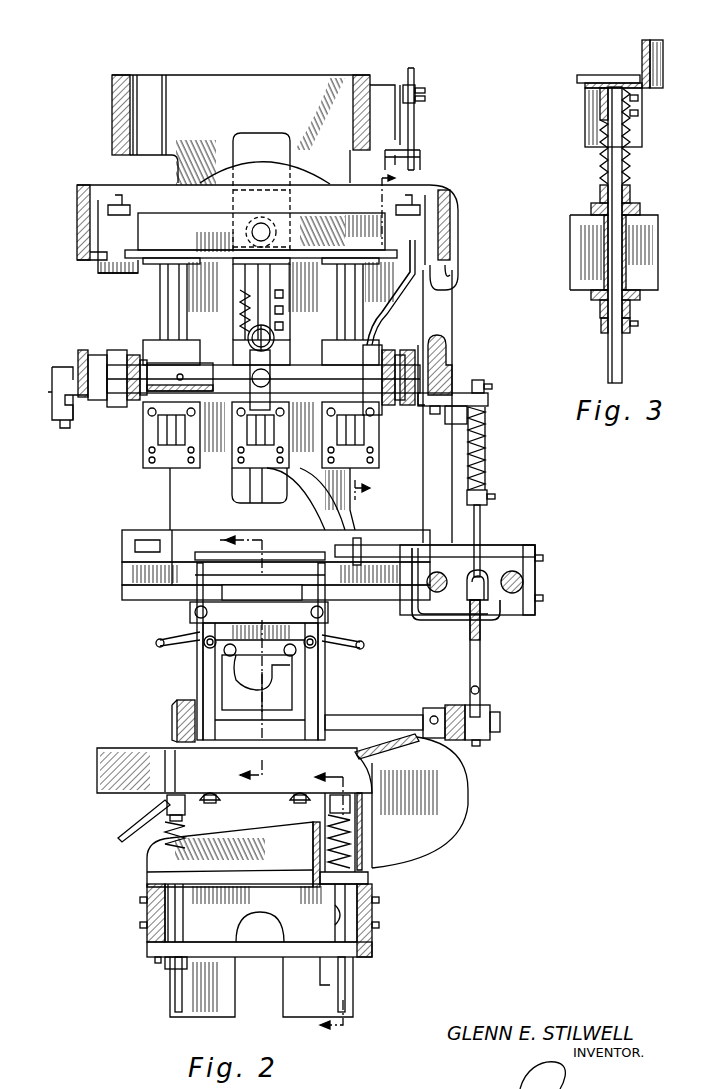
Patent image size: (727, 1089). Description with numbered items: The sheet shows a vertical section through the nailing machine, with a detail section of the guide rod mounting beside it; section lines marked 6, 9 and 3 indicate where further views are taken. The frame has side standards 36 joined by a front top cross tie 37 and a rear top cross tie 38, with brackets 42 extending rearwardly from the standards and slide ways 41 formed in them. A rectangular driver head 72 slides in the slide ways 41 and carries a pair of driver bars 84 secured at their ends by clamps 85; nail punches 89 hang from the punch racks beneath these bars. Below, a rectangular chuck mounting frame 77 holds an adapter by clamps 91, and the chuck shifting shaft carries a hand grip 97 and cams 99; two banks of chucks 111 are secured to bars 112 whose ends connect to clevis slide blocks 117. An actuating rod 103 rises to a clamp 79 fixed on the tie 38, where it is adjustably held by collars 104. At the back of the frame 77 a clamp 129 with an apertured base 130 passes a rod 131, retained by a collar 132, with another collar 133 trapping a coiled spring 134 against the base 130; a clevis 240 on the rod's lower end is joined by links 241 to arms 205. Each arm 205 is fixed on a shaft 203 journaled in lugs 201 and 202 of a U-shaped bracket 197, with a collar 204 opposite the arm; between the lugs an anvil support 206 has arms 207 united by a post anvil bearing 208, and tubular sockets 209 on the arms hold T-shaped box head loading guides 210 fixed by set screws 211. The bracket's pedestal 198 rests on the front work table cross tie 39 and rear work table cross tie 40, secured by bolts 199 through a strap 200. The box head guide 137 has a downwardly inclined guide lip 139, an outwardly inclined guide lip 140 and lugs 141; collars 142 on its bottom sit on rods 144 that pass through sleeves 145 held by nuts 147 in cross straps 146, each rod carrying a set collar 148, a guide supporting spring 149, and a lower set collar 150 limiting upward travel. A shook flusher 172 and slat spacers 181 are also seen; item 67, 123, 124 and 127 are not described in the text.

In FIG. 2, the side standards 36 is at (275, 75).
In FIG. 2, the front top cross tie 37 is at (121, 75).
In FIG. 2, the rear top cross tie 38 is at (362, 75).
In FIG. 2, the clamp 79 is at (393, 80).
In FIG. 2, the collars 104 is at (415, 88).
In FIG. 2, the actuating rod 103 is at (416, 148).
In FIG. 2, the slide ways 41 is at (282, 185).
In FIG. 2, the section line 6 is at (381, 334).
In FIG. 2, the driver head 72 is at (77, 205).
In FIG. 2, the clevis slide blocks 117 is at (100, 274).
In FIG. 2, the clamps 85 is at (138, 201).
In FIG. 2, the driver bars 84 is at (312, 214).
In FIG. 2, the nail punches 89 is at (160, 296).
In FIG. 2, the bars 112 is at (312, 363).
In FIG. 2, the hand grip 97 is at (152, 365).
In FIG. 2, the coupling 127 is at (248, 338).
In FIG. 2, the cams 99 is at (115, 352).
In FIG. 2, the chuck mounting frame 77 is at (78, 362).
In FIG. 2, the clamps 91 is at (52, 415).
In FIG. 2, the bearing 124 is at (412, 352).
In FIG. 2, the support post 123 is at (420, 348).
In FIG. 2, the clamp 129 is at (452, 360).
In FIG. 2, the apertured base 130 is at (488, 399).
In FIG. 2, the collar 132 is at (485, 386).
In FIG. 2, the coiled spring 134 is at (486, 455).
In FIG. 2, the collar 133 is at (488, 495).
In FIG. 2, the rod 131 is at (481, 522).
In FIG. 2, the chucks 111 is at (145, 468).
In FIG. 2, the manifold 67 is at (295, 505).
In FIG. 2, the shook flusher 172 is at (122, 532).
In FIG. 2, the section line 9 is at (234, 658).
In FIG. 2, the slat spacers 181 is at (372, 545).
In FIG. 2, the clevis 240 is at (485, 575).
In FIG. 2, the brackets 42 is at (422, 625).
In FIG. 2, the links 241 is at (482, 652).
In FIG. 2, the post anvil bearing 208 is at (200, 560).
In FIG. 2, the anvil support 206 is at (190, 657).
In FIG. 2, the arms 207 is at (222, 678).
In FIG. 2, the tubular sockets 209 is at (205, 638).
In FIG. 2, the box head loading guides 210 is at (158, 640).
In FIG. 2, the set screws 211 is at (215, 645).
In FIG. 2, the lug 201 is at (177, 715).
In FIG. 2, the shaft 203 is at (385, 714).
In FIG. 2, the collar 204 is at (434, 710).
In FIG. 2, the lug 202 is at (455, 705).
In FIG. 2, the arm 205 is at (492, 712).
In FIG. 2, the outwardly inclined guide lip 140 is at (97, 765).
In FIG. 2, the section line 3 is at (320, 901).
In FIG. 2, the U-shaped bracket 197 is at (440, 822).
In FIG. 2, the lugs 141 is at (290, 797).
In FIG. 3, the lugs 141 is at (592, 75).
In FIG. 2, the collars 142 is at (185, 803).
In FIG. 3, the collars 142 is at (590, 92).
In FIG. 2, the downwardly inclined guide lip 139 is at (118, 838).
In FIG. 2, the pedestal 198 is at (147, 875).
In FIG. 2, the front work table cross tie 39 is at (147, 915).
In FIG. 3, the front work table cross tie 39 is at (575, 250).
In FIG. 2, the rear work table cross tie 40 is at (372, 915).
In FIG. 2, the sleeves 145 is at (185, 922).
In FIG. 3, the sleeves 145 is at (627, 250).
In FIG. 2, the strap 200 is at (147, 950).
In FIG. 2, the bolts 199 is at (157, 964).
In FIG. 2, the rods 144 is at (175, 995).
In FIG. 3, the rods 144 is at (612, 350).
In FIG. 3, the right-hand box head guide 137 is at (645, 42).
In FIG. 3, the set collar 148 is at (600, 112).
In FIG. 3, the guide supporting spring 149 is at (600, 160).
In FIG. 3, the nuts 147 is at (632, 190).
In FIG. 3, the cross straps 146 is at (642, 208).
In FIG. 3, the set collars 150 is at (601, 324).